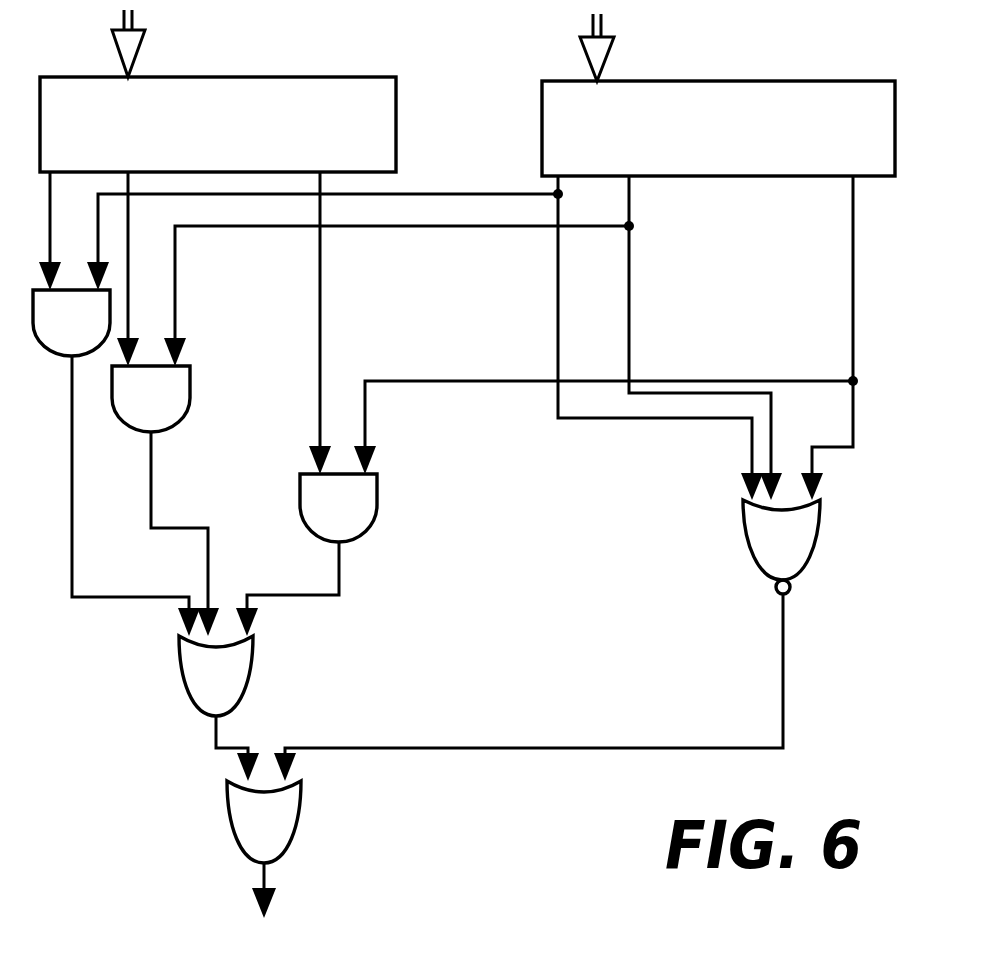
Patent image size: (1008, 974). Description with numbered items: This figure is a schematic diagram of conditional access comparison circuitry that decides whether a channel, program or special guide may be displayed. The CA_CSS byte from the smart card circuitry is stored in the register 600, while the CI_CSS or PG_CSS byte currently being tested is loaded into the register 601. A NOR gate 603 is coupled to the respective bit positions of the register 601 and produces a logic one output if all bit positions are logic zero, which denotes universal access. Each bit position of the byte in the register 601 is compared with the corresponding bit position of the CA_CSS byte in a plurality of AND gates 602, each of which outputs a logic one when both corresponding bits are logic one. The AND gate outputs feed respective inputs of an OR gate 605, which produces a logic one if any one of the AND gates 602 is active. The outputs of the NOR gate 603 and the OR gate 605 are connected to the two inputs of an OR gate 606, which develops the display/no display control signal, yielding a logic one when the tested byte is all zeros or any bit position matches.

The register 600 is at (290, 75).
The register 601 is at (833, 80).
The AND gates 602 is at (273, 442).
The NOR gate 603 is at (816, 528).
The OR gate 605 is at (253, 657).
The OR gate 606 is at (298, 808).